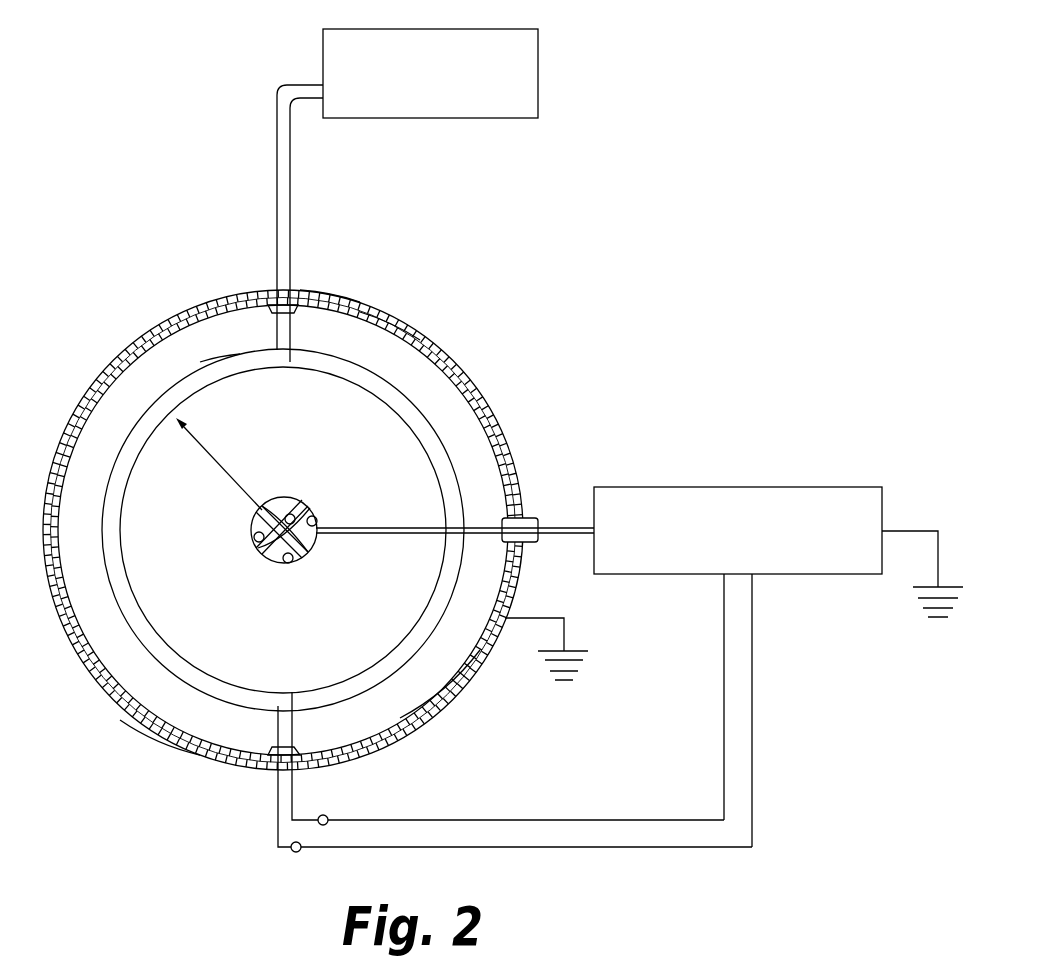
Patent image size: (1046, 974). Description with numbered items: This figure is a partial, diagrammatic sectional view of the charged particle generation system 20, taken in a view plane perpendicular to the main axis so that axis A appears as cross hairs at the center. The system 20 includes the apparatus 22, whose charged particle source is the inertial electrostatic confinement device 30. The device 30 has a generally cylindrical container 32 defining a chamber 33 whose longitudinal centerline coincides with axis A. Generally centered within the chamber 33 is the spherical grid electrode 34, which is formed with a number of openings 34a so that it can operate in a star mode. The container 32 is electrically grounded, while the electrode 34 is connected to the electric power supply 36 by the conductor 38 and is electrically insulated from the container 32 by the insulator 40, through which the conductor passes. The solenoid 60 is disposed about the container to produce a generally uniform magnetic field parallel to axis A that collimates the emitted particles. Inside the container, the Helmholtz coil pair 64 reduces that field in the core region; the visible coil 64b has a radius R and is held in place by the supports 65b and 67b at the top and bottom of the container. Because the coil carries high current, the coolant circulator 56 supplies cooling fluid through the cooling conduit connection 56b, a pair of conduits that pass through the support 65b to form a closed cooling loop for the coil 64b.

The charged particle generation system 20 is at (532, 226).
The apparatus 22 is at (516, 428).
The inertial electrostatic confinement device 30 is at (447, 722).
The container 32 is at (385, 336).
The chamber 33 is at (183, 722).
The electrode 34 is at (268, 490).
The openings 34a is at (253, 537).
The electric power supply 36 is at (745, 487).
The conductor 38 is at (562, 535).
The insulator 40 is at (540, 518).
The coolant circulator 56 is at (539, 59).
The cooling conduit connection 56b is at (277, 171).
The solenoid 60 is at (356, 300).
The coil pair 64 is at (161, 622).
The coil 64b is at (212, 358).
The support/mount 65b is at (292, 330).
The support/mount 67b is at (322, 766).
The axis A is at (300, 497).
The radius R is at (208, 455).